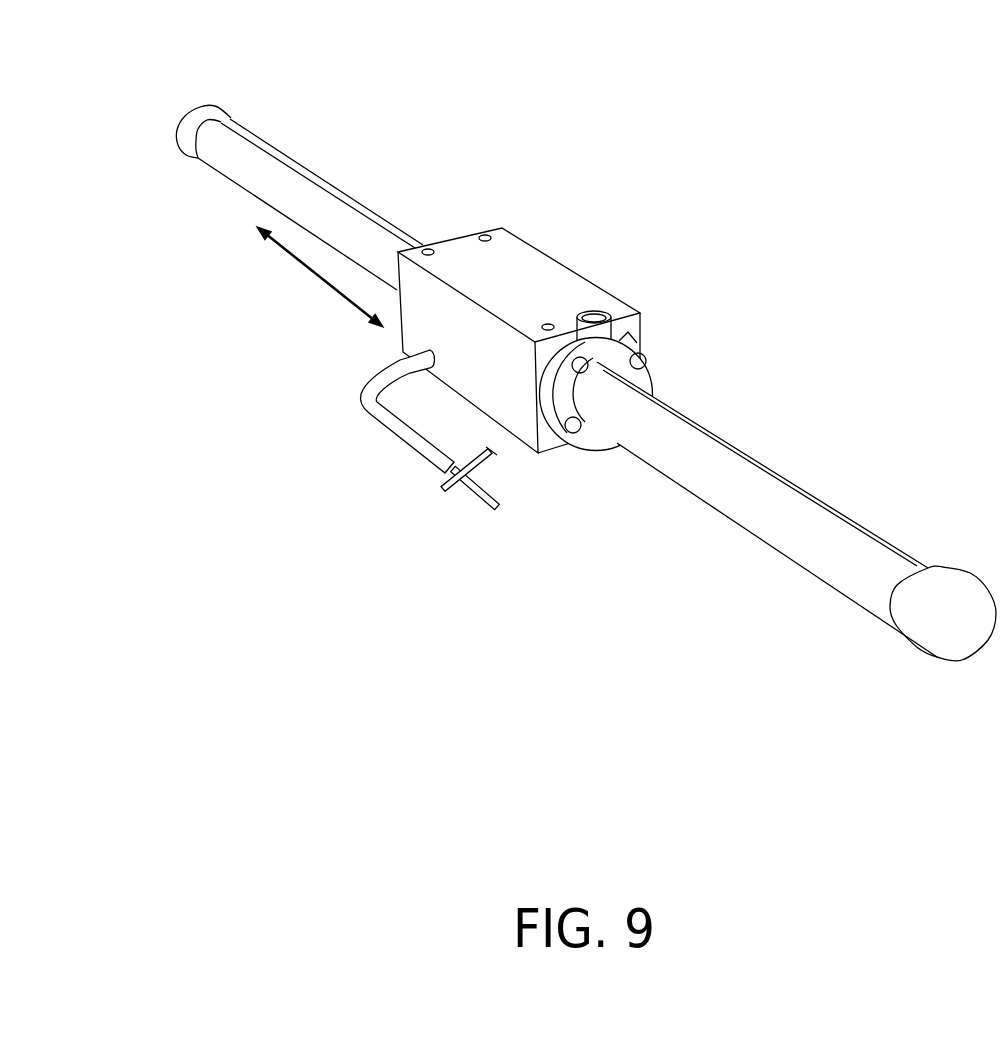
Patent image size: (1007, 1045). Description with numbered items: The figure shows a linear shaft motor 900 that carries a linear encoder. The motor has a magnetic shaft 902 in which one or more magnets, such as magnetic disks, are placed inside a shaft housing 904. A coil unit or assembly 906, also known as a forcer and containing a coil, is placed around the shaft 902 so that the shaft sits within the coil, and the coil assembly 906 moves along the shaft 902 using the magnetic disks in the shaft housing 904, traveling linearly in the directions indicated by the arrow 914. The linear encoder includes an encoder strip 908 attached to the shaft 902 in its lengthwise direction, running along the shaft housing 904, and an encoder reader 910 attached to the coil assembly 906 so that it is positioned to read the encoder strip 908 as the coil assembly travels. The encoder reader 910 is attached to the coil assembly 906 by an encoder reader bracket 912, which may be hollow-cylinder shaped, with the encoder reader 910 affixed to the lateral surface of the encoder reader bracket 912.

The linear shaft motor 900 is at (586, 378).
The magnetic shaft 902 is at (796, 537).
The shaft housing 904 is at (812, 555).
The coil unit or assembly 906 is at (543, 218).
The encoder strip 908 is at (340, 190).
The encoder reader 910 is at (592, 307).
The encoder reader bracket 912 is at (657, 377).
The arrow 914 is at (303, 267).